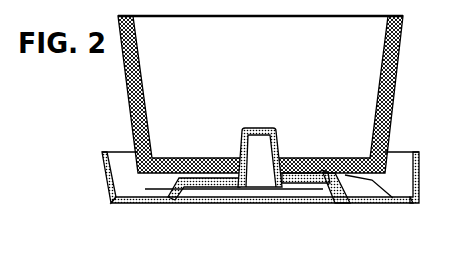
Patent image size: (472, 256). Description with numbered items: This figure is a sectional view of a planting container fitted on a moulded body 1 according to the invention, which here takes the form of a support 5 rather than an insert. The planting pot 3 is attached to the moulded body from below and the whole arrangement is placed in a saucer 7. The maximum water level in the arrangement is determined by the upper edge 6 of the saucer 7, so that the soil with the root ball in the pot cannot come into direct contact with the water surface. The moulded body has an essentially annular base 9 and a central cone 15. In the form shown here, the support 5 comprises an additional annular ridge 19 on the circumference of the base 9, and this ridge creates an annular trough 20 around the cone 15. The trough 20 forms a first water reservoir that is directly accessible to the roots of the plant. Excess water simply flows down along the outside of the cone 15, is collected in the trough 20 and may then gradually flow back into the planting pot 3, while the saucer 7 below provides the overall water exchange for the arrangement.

The moulded body 1 is at (327, 158).
The planting pot 3 is at (145, 173).
The support 5 is at (152, 203).
The upper edge 6 is at (104, 152).
The saucer 7 is at (108, 186).
The annular base 9 is at (298, 187).
The cone 15 is at (250, 153).
The annular ridge 19 is at (401, 201).
The annular trough 20 is at (326, 200).